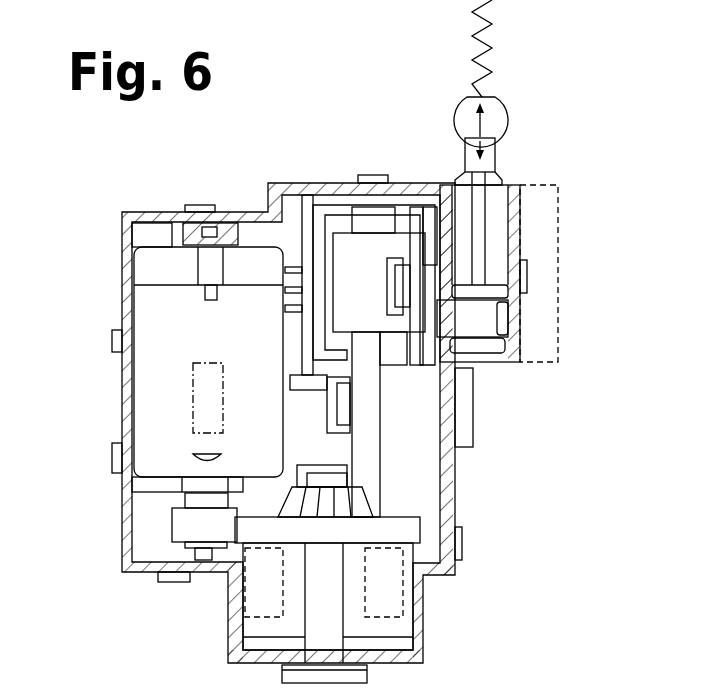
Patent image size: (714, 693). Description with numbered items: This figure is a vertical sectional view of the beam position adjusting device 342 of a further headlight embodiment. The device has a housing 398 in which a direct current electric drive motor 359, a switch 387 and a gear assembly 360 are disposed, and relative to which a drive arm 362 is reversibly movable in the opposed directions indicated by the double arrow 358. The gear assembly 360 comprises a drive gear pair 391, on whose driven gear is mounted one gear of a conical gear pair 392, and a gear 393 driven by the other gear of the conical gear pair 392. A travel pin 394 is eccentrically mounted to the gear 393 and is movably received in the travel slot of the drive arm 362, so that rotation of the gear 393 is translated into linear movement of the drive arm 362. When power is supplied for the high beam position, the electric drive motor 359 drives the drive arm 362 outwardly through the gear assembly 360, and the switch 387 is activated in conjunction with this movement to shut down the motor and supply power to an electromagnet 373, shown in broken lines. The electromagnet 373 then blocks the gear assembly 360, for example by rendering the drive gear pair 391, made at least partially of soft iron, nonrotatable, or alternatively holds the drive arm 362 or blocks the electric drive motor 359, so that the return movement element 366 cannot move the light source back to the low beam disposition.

The beam position adjusting device 342 is at (552, 503).
The double arrow 358 is at (462, 130).
The direct current electric drive motor 359 is at (150, 270).
The gear assembly 360 is at (396, 495).
The drive arm 362 is at (502, 123).
The return movement element 366 is at (487, 53).
The electromagnet 373 is at (255, 608).
The switch 387 is at (333, 218).
The drive gear pair 391 is at (252, 530).
The conical gear pair 392 is at (373, 458).
The gear 393 is at (423, 217).
The travel pin 394 is at (483, 318).
The housing 398 is at (128, 383).